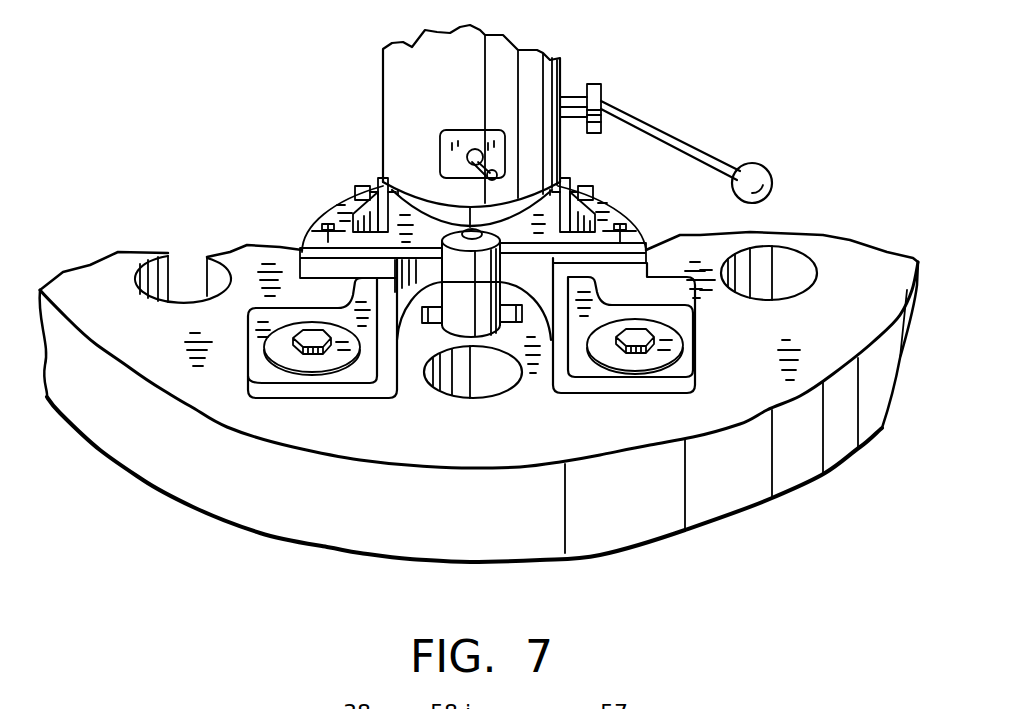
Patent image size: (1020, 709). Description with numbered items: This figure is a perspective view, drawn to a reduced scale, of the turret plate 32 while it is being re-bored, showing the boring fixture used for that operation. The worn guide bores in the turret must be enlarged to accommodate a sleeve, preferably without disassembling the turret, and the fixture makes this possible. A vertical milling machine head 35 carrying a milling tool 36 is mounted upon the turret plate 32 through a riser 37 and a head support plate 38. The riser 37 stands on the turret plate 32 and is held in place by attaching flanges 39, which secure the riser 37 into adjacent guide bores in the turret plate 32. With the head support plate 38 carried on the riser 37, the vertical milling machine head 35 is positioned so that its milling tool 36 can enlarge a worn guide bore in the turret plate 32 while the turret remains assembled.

The turret plate 32 is at (743, 488).
The vertical milling machine head 35 is at (547, 73).
The milling tool 36 is at (500, 333).
The riser 37 is at (283, 308).
The head support plate 38 is at (337, 207).
The attaching flanges 39 is at (312, 395).